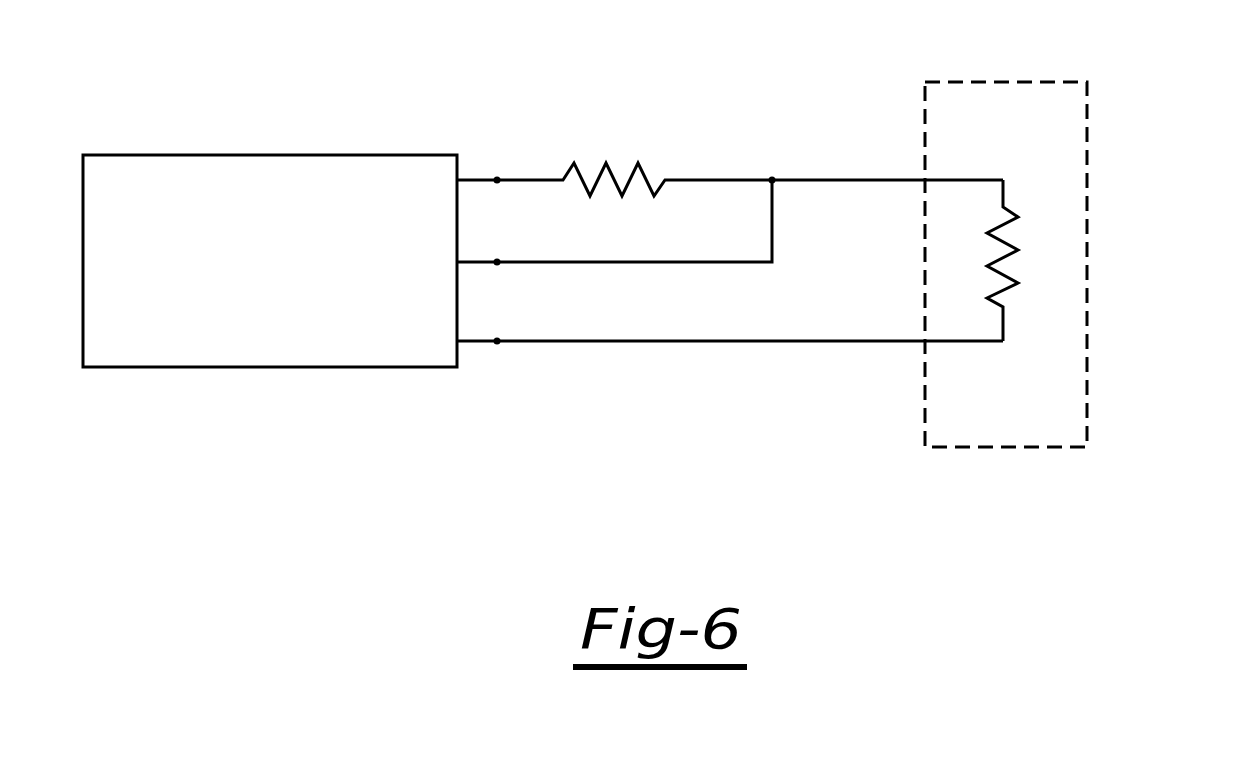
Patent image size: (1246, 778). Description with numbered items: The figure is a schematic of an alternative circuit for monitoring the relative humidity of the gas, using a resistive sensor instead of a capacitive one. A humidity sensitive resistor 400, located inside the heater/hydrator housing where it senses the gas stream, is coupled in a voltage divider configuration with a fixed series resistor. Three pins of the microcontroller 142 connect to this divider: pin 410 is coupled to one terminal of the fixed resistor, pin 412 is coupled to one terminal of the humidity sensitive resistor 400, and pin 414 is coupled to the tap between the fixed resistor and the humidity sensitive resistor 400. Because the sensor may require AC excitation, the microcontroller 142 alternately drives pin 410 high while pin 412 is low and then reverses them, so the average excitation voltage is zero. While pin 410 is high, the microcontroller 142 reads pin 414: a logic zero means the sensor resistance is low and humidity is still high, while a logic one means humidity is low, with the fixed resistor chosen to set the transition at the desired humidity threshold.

The microcontroller 142 is at (255, 156).
The pin 410 is at (497, 180).
The pin 412 is at (497, 341).
The pin 414 is at (497, 262).
The humidity sensitive resistor 400 is at (1087, 227).